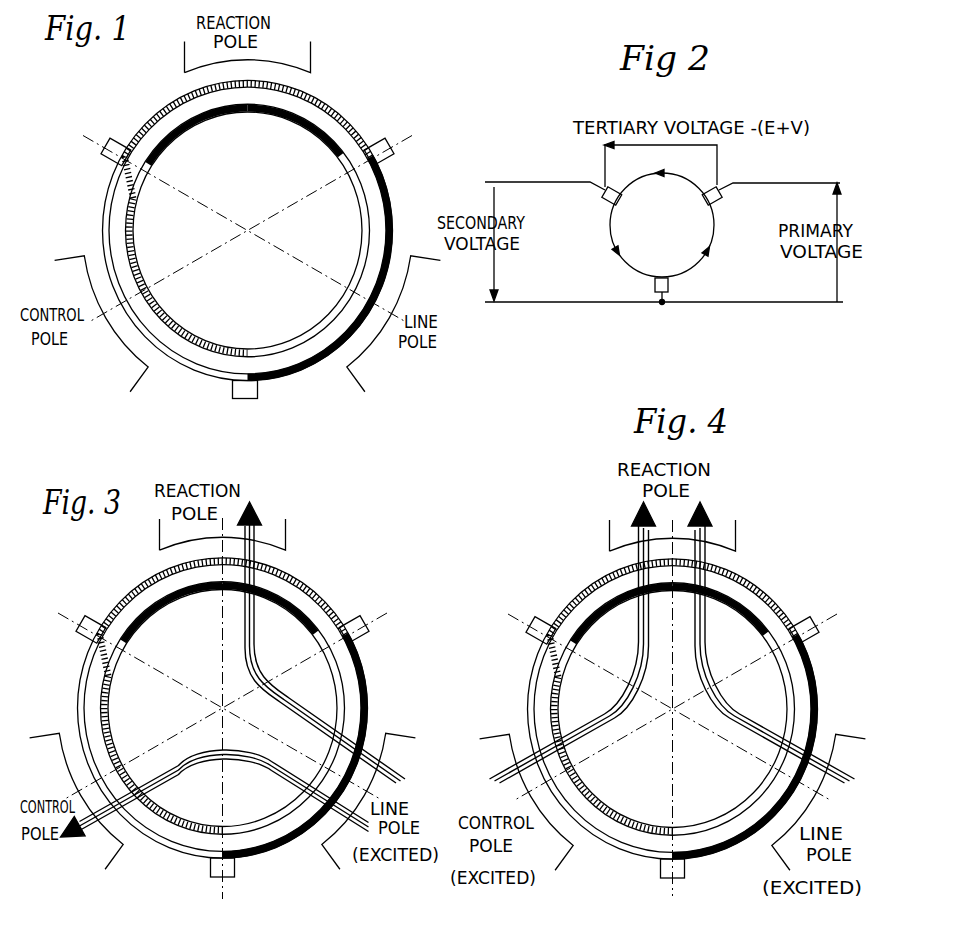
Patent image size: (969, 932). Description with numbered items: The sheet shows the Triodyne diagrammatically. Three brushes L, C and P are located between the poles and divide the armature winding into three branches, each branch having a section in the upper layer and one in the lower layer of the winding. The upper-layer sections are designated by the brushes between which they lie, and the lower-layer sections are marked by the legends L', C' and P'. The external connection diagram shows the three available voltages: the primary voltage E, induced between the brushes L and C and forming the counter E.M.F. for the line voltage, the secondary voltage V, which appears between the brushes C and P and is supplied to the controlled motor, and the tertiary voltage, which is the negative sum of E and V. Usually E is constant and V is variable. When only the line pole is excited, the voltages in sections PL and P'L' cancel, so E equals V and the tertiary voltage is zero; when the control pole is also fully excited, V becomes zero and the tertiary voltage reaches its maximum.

In FIG. 1, the brush P is at (102, 152).
In FIG. 2, the brush P is at (600, 179).
In FIG. 3, the brush P is at (87, 617).
In FIG. 4, the brush P is at (534, 618).
In FIG. 1, the brush L is at (385, 152).
In FIG. 2, the brush L is at (719, 183).
In FIG. 3, the brush L is at (358, 622).
In FIG. 4, the brush L is at (806, 621).
In FIG. 1, the brush C is at (245, 404).
In FIG. 2, the brush C is at (664, 303).
In FIG. 3, the brush C is at (226, 882).
In FIG. 4, the brush C is at (676, 882).
In FIG. 1, the lower layer armature section end L' is at (197, 142).
In FIG. 3, the lower layer armature section end L' is at (172, 621).
In FIG. 4, the lower layer armature section end L' is at (622, 621).
In FIG. 1, the lower layer armature section end C' is at (294, 146).
In FIG. 3, the lower layer armature section end C' is at (269, 625).
In FIG. 4, the lower layer armature section end C' is at (719, 625).
In FIG. 1, the lower layer armature section end P' is at (196, 276).
In FIG. 3, the lower layer armature section end P' is at (178, 753).
In FIG. 4, the lower layer armature section end P' is at (626, 754).
In FIG. 2, the primary voltage E is at (846, 242).
In FIG. 2, the secondary voltage V is at (505, 244).